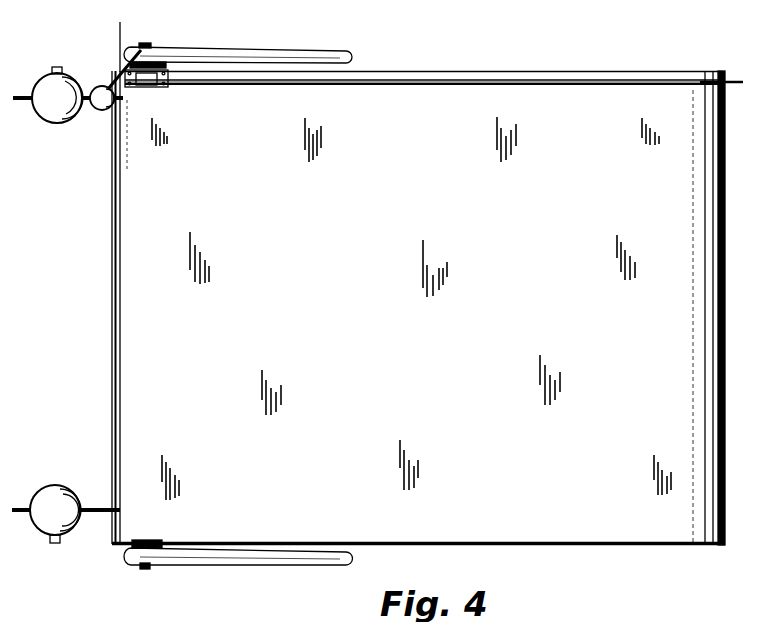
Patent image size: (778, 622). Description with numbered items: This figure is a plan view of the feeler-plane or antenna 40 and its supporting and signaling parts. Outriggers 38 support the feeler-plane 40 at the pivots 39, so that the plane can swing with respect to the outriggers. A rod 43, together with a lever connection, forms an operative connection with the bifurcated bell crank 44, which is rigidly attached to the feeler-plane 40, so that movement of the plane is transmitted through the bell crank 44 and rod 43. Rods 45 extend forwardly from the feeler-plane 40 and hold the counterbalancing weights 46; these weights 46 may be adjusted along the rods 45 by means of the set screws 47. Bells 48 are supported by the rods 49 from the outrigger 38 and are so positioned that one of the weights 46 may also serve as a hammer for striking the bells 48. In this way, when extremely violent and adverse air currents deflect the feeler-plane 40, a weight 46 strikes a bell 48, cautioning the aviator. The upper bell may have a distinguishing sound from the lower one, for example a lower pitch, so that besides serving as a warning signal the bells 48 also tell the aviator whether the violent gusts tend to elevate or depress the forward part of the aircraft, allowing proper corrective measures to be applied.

The outrigger 38 is at (300, 52).
The pivot 39 is at (146, 46).
The feeler-plane 40 is at (445, 73).
The rod 43 is at (527, 80).
The bifurcated bell crank 44 is at (163, 87).
The rod 45 is at (17, 95).
The counterbalancing weight 46 is at (60, 108).
The set screw 47 is at (58, 67).
The bell 48 is at (102, 107).
The rod 49 is at (126, 39).